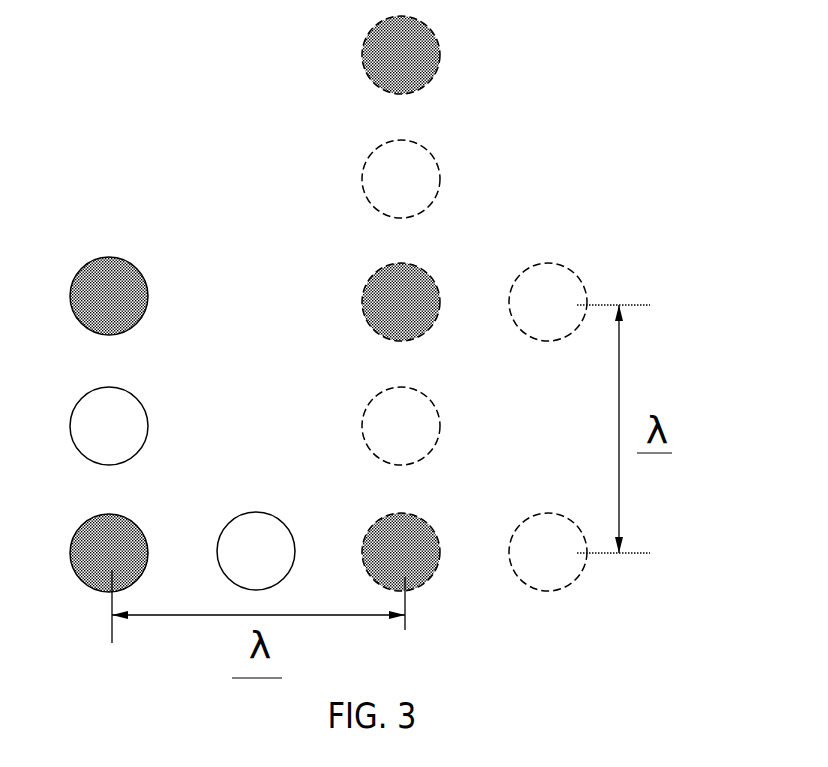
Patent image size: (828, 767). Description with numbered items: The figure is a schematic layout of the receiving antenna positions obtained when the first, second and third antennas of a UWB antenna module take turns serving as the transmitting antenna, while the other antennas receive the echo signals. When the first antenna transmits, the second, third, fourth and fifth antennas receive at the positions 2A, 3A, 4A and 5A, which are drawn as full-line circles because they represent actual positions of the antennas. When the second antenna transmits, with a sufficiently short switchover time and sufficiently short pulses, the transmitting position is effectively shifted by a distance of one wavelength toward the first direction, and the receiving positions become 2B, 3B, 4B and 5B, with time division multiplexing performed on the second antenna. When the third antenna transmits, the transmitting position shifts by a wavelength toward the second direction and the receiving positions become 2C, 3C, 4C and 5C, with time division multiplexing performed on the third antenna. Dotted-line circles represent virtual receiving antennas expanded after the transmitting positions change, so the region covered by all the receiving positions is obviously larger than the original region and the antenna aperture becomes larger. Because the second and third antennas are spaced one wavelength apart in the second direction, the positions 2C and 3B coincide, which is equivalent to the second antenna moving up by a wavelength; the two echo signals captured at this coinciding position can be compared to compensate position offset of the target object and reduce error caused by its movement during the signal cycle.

The receiving position of the second antenna 2A is at (109, 553).
The receiving position of the second antenna 2B is at (401, 552).
The receiving position of the second antenna 2C is at (401, 302).
The receiving position of the third antenna 3A is at (109, 296).
The receiving position of the third antenna 3B is at (401, 302).
The receiving position of the third antenna 3C is at (401, 55).
The receiving position of the fourth antenna 4A is at (256, 551).
The receiving position of the fourth antenna 4B is at (548, 552).
The receiving position of the fourth antenna 4C is at (548, 302).
The receiving position of the fifth antenna 5A is at (109, 426).
The receiving position of the fifth antenna 5B is at (401, 426).
The receiving position of the fifth antenna 5C is at (401, 179).